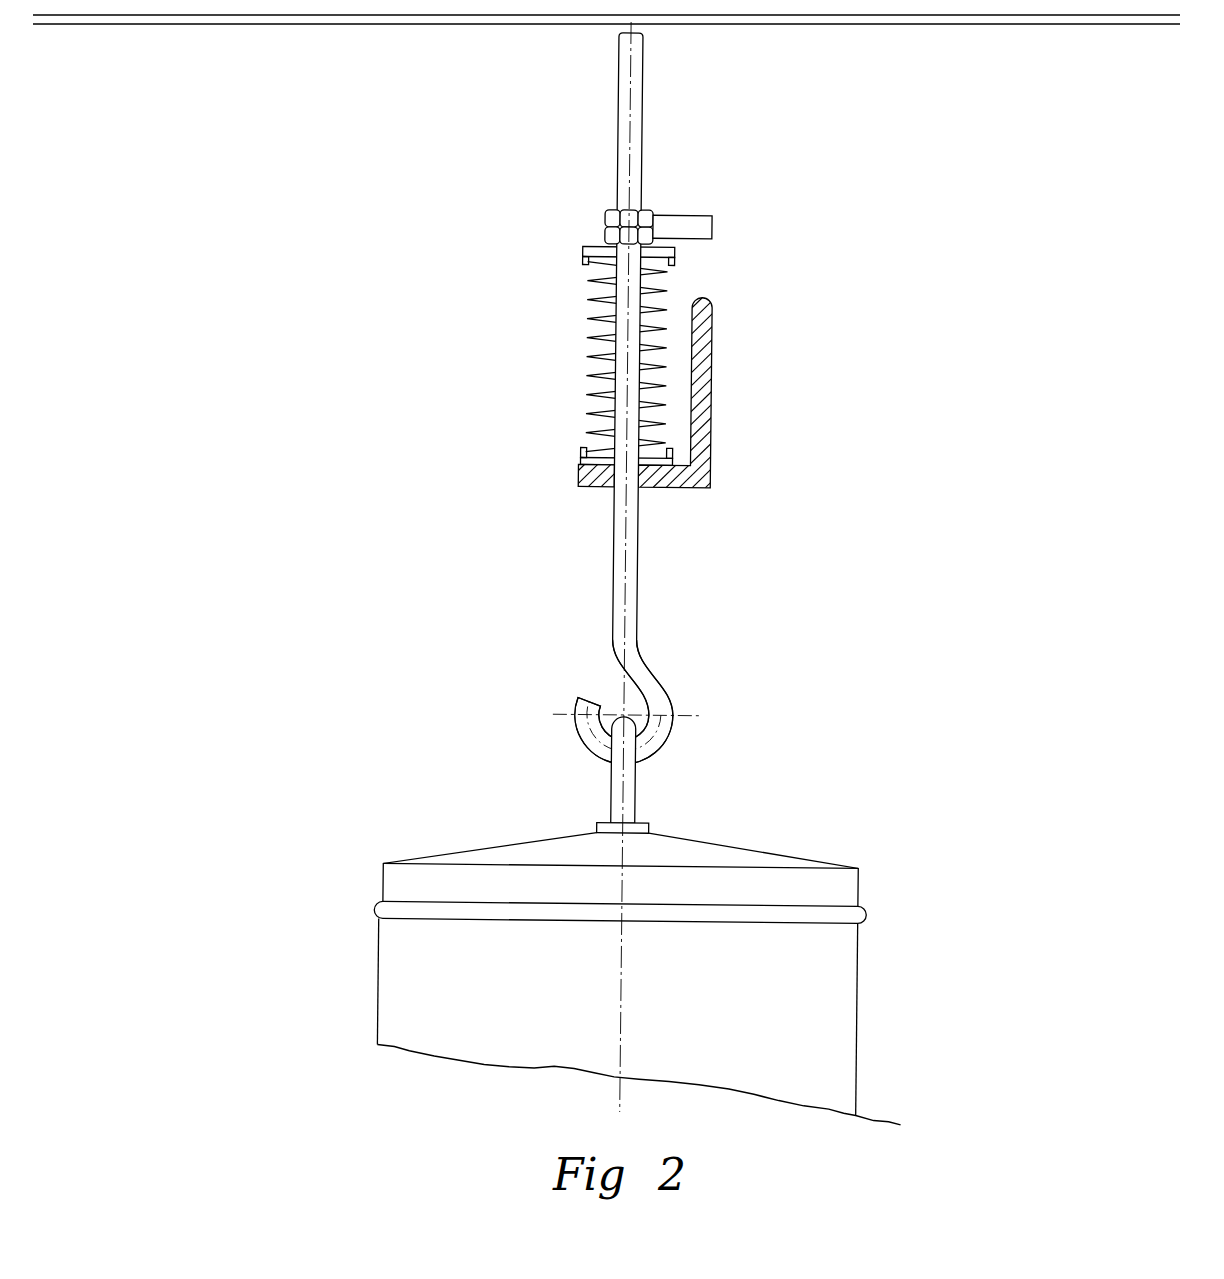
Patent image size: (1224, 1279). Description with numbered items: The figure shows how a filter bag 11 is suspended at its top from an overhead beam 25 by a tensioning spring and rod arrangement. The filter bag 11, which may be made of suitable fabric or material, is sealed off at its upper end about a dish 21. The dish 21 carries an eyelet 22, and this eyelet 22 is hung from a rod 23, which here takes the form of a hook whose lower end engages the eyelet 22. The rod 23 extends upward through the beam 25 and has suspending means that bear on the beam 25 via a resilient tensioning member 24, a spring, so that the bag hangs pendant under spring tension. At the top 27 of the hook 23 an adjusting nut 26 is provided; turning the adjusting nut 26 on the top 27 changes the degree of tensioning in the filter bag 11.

The top of the hook 27 is at (643, 55).
The adjusting nut 26 is at (714, 218).
The resilient tensioning member 24 is at (668, 270).
The beam 25 is at (712, 368).
The rod 23 is at (650, 659).
The eyelet 22 is at (640, 770).
The dish 21 is at (671, 866).
The filter bag 11 is at (860, 990).